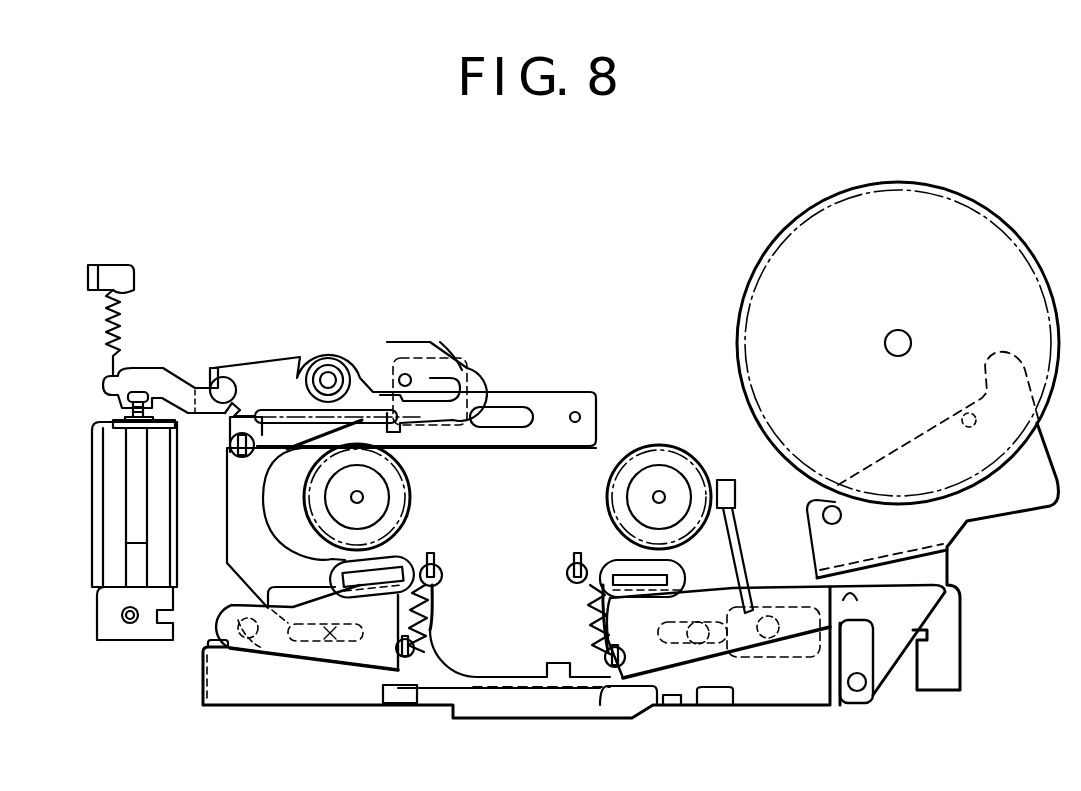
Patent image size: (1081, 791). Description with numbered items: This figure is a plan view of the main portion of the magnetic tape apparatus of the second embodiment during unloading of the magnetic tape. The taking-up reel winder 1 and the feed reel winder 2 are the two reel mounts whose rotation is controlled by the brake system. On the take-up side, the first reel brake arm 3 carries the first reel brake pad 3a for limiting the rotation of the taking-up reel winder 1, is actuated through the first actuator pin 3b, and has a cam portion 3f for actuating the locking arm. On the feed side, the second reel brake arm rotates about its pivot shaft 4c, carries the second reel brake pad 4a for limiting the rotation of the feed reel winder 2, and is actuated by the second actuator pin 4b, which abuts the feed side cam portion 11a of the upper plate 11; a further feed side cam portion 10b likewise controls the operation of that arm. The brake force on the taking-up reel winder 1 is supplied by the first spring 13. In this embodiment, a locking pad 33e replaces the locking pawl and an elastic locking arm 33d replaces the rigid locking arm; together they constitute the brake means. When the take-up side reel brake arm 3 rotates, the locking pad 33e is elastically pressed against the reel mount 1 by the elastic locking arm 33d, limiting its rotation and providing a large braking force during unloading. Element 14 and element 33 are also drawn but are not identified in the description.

The taking-up reel winder 1 is at (607, 498).
The feed reel winder 2 is at (411, 493).
The first reel brake arm 3 is at (653, 657).
The first reel brake pad 3a is at (618, 560).
The first actuator pin 3b is at (760, 660).
The cam portion 3f is at (840, 674).
The second reel brake pad 4a is at (402, 562).
The second actuator pin 4b is at (252, 656).
The pivot shaft 4c is at (330, 648).
The feed side cam portion 10b is at (208, 647).
The upper plate 11 is at (349, 392).
The feed side cam portion 11a is at (243, 653).
The first spring 13 is at (590, 643).
The spring 14 is at (434, 597).
The disc 33 is at (898, 343).
The elastic locking arm 33d is at (742, 562).
The locking pad 33e is at (723, 478).